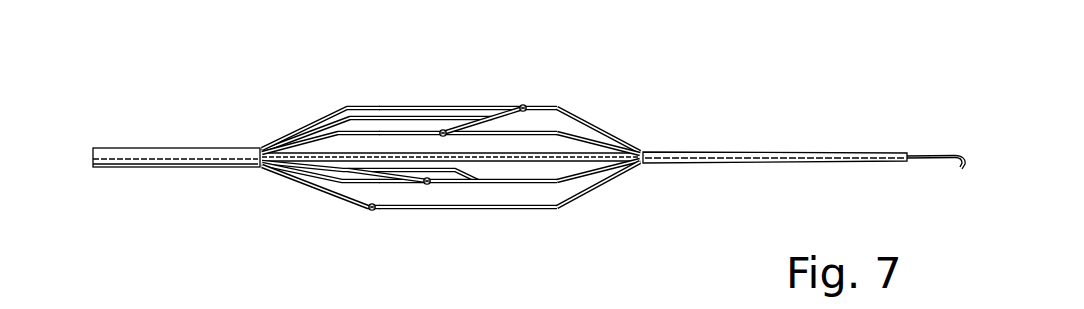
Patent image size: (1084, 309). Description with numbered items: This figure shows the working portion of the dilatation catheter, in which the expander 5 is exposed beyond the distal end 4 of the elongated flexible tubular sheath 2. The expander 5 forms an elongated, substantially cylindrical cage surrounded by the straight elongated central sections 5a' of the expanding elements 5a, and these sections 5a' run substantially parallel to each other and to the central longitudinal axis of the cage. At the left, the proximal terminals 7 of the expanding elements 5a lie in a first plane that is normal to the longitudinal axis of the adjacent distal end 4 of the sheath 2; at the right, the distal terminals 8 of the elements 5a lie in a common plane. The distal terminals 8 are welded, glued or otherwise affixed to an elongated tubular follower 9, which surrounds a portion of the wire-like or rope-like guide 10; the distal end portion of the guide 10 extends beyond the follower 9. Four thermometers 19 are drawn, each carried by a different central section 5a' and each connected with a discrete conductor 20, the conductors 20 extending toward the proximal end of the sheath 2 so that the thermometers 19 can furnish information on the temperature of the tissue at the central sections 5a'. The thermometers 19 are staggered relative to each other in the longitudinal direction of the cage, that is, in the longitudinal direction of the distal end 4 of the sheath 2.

The tubular sheath 2 is at (112, 147).
The distal end 4 is at (182, 167).
The expander 5 is at (360, 210).
The expanding elements 5a is at (490, 180).
The central sections 5a' is at (435, 119).
The proximal terminals 7 is at (300, 183).
The distal terminals 8 is at (593, 132).
The tubular follower 9 is at (723, 150).
The guide 10 is at (930, 155).
The thermometers 19 is at (446, 132).
The conductors 20 is at (402, 169).